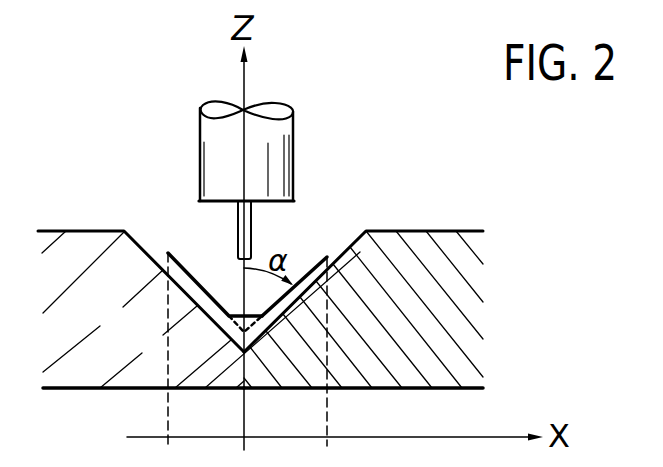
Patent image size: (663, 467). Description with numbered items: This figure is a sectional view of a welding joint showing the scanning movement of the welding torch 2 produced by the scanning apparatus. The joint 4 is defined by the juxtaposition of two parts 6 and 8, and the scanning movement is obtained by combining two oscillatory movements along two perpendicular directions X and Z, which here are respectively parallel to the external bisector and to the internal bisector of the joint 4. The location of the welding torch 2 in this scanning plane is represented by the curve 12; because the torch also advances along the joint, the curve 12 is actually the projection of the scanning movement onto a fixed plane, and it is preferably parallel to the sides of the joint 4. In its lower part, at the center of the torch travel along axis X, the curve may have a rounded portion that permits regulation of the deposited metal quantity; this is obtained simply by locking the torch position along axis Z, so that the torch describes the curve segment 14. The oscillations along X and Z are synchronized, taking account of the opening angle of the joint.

The welding torch 2 is at (215, 128).
The joint 4 is at (234, 255).
The part 6 is at (82, 245).
The part 8 is at (426, 252).
The curve 12 is at (306, 270).
The curve segment 14 is at (236, 316).